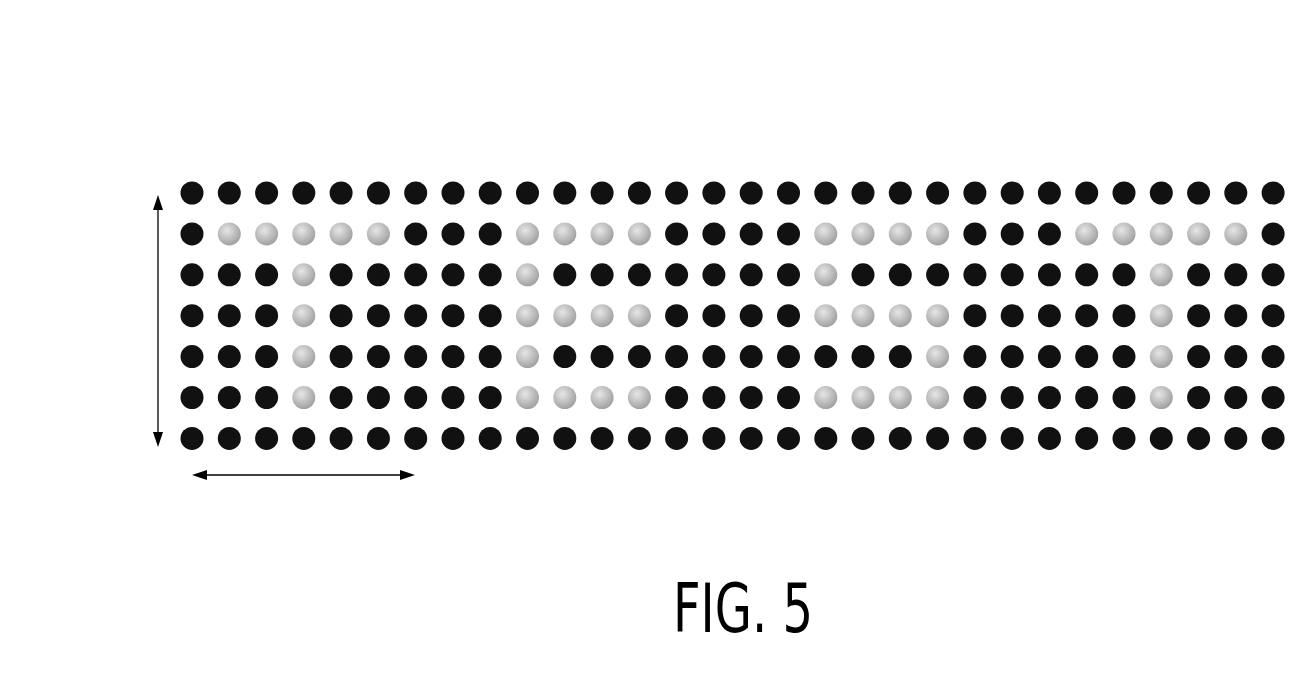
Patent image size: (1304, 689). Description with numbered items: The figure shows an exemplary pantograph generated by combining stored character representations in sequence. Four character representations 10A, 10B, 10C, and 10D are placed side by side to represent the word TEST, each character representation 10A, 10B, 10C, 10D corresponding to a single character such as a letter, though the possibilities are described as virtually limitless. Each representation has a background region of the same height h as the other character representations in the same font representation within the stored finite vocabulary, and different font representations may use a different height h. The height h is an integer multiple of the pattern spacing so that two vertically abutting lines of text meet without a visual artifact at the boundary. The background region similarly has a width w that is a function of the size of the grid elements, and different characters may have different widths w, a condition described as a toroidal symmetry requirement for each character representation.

The character representation 10A is at (350, 142).
The character representation 10B is at (646, 143).
The character representation 10C is at (942, 143).
The character representation 10D is at (1204, 143).
The height h is at (158, 320).
The width w is at (303, 475).